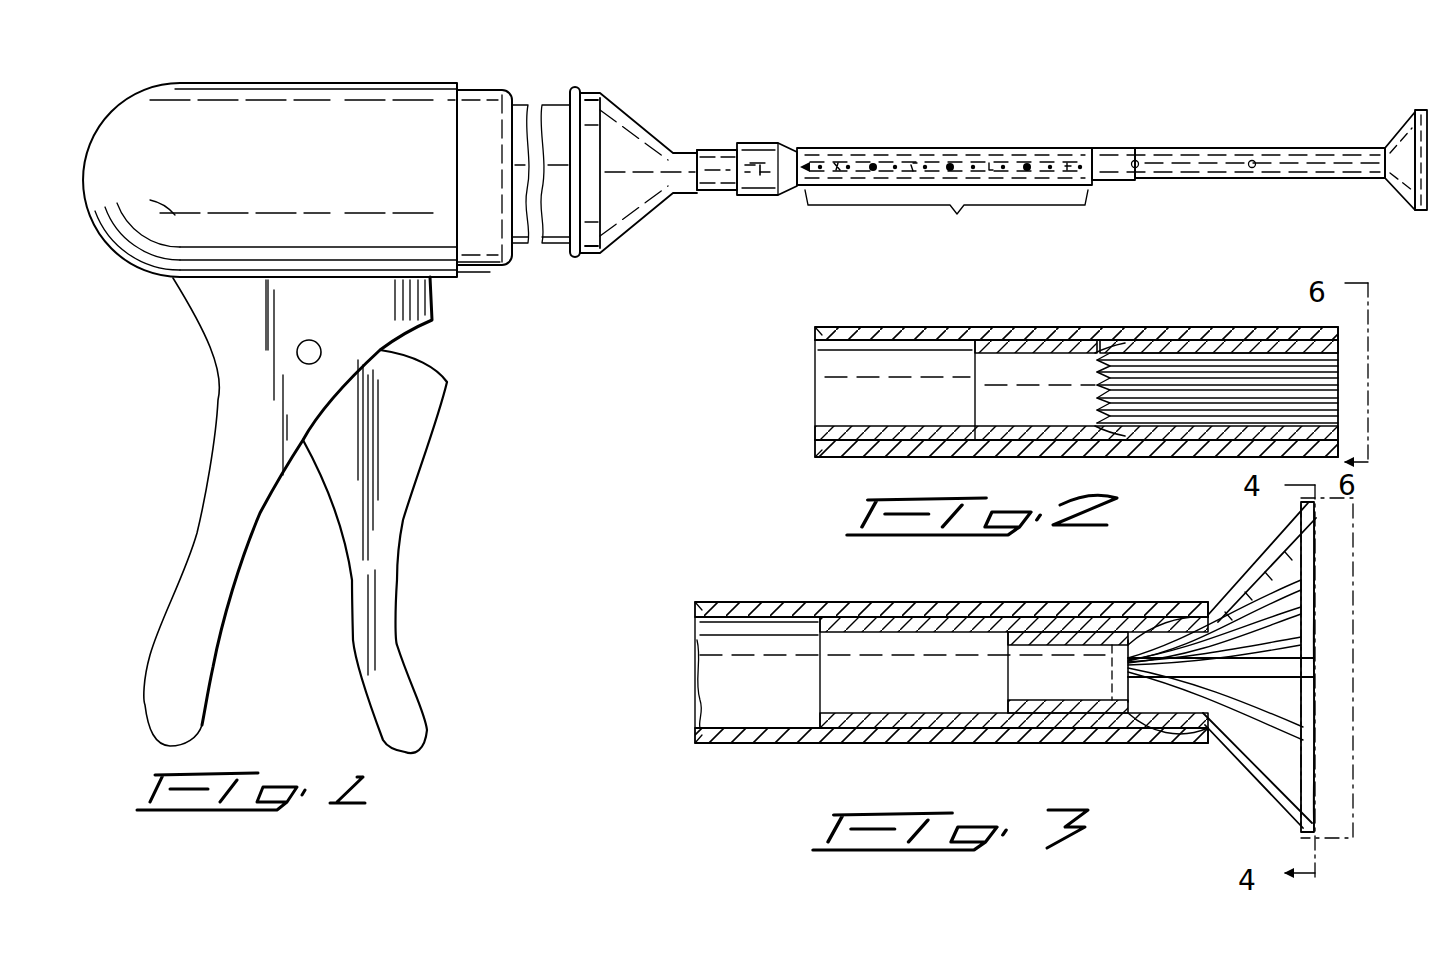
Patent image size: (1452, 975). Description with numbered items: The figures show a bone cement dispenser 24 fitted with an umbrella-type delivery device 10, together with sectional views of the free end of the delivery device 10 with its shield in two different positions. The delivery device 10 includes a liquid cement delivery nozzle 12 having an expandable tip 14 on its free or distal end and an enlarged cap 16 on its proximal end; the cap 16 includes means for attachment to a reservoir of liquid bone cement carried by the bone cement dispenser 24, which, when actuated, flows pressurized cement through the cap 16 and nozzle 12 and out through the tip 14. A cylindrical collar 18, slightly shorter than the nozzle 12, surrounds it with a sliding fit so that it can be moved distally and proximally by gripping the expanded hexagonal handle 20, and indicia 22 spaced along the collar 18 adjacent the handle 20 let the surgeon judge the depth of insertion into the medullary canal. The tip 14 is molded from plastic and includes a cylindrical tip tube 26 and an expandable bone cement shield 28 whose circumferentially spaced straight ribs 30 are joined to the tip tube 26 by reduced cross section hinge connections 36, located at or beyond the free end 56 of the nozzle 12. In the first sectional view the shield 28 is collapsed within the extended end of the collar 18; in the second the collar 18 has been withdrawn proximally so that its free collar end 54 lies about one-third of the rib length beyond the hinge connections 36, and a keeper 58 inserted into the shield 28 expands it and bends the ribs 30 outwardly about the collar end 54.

In FIG. 1, the delivery device 10 is at (1158, 142).
In FIG. 1, the liquid cement delivery nozzle 12 is at (718, 150).
In FIG. 2, the liquid cement delivery nozzle 12 is at (818, 346).
In FIG. 3, the liquid cement delivery nozzle 12 is at (836, 620).
In FIG. 1, the expandable tip 14 is at (1402, 128).
In FIG. 2, the expandable tip 14 is at (972, 396).
In FIG. 3, the expandable tip 14 is at (903, 672).
In FIG. 1, the enlarged cap 16 is at (630, 118).
In FIG. 1, the cylindrical collar 18 is at (935, 148).
In FIG. 2, the cylindrical collar 18 is at (920, 330).
In FIG. 3, the cylindrical collar 18 is at (740, 602).
In FIG. 1, the expanded hexagonal handle 20 is at (762, 142).
In FIG. 1, the indicia 22 is at (946, 225).
In FIG. 1, the bone cement dispenser 24 is at (259, 88).
In FIG. 2, the tip tube 26 is at (1010, 350).
In FIG. 3, the tip tube 26 is at (1026, 640).
In FIG. 2, the expandable bone cement shield 28 is at (1212, 335).
In FIG. 3, the expandable bone cement shield 28 is at (1248, 772).
In FIG. 2, the ribs 30 is at (1278, 432).
In FIG. 2, the hinge connections 36 is at (1100, 356).
In FIG. 3, the free collar end 54 is at (1216, 605).
In FIG. 3, the free end of nozzle 56 is at (1146, 615).
In FIG. 1, the keeper 58 is at (1426, 185).
In FIG. 3, the keeper 58 is at (1356, 592).